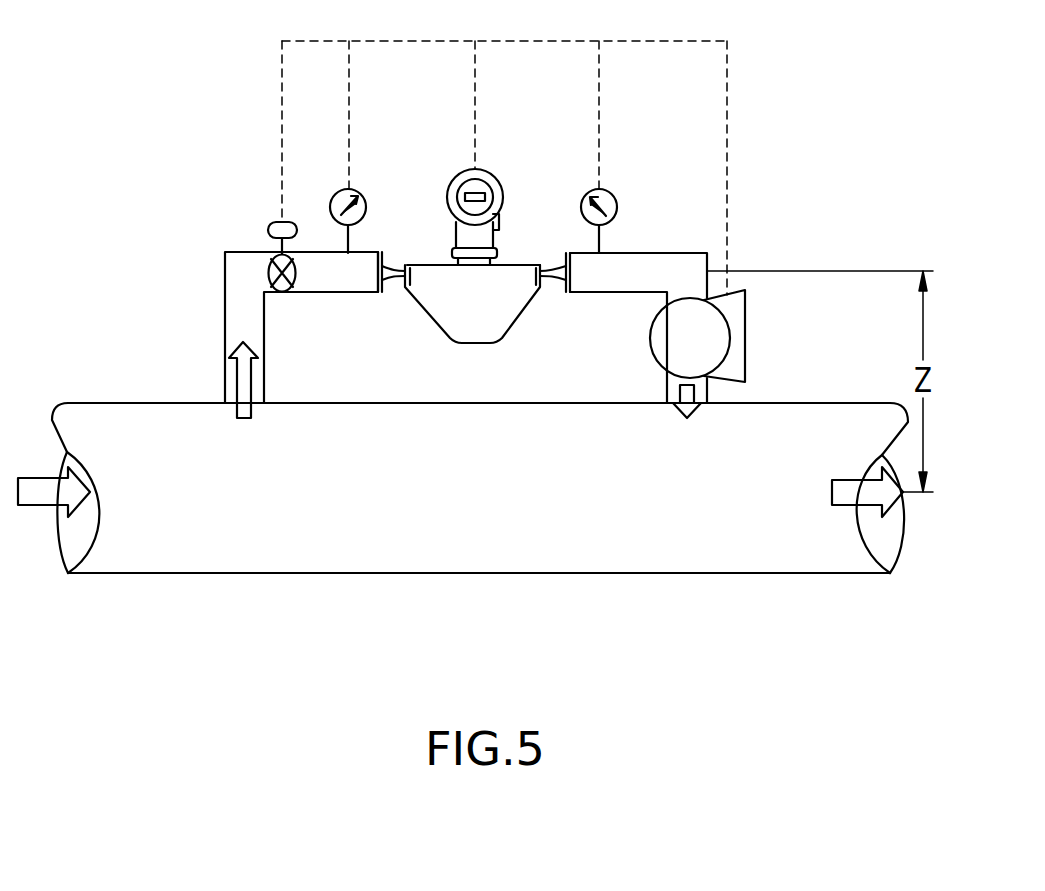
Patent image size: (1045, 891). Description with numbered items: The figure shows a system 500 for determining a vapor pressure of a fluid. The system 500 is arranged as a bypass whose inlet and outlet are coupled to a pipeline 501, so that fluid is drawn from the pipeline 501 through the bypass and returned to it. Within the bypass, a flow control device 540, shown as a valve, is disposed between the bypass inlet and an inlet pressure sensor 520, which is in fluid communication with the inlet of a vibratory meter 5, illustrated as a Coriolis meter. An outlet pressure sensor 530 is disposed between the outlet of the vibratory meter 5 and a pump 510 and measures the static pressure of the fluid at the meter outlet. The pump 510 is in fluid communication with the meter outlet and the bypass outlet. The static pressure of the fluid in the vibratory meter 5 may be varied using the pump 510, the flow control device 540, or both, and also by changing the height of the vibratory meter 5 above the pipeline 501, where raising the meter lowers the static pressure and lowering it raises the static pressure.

The system 500 is at (120, 168).
The vibratory meter 5 is at (485, 160).
The pipeline 501 is at (453, 512).
The pump 510 is at (730, 303).
The inlet pressure sensor 520 is at (340, 195).
The outlet pressure sensor 530 is at (610, 192).
The flow control device 540 is at (268, 228).